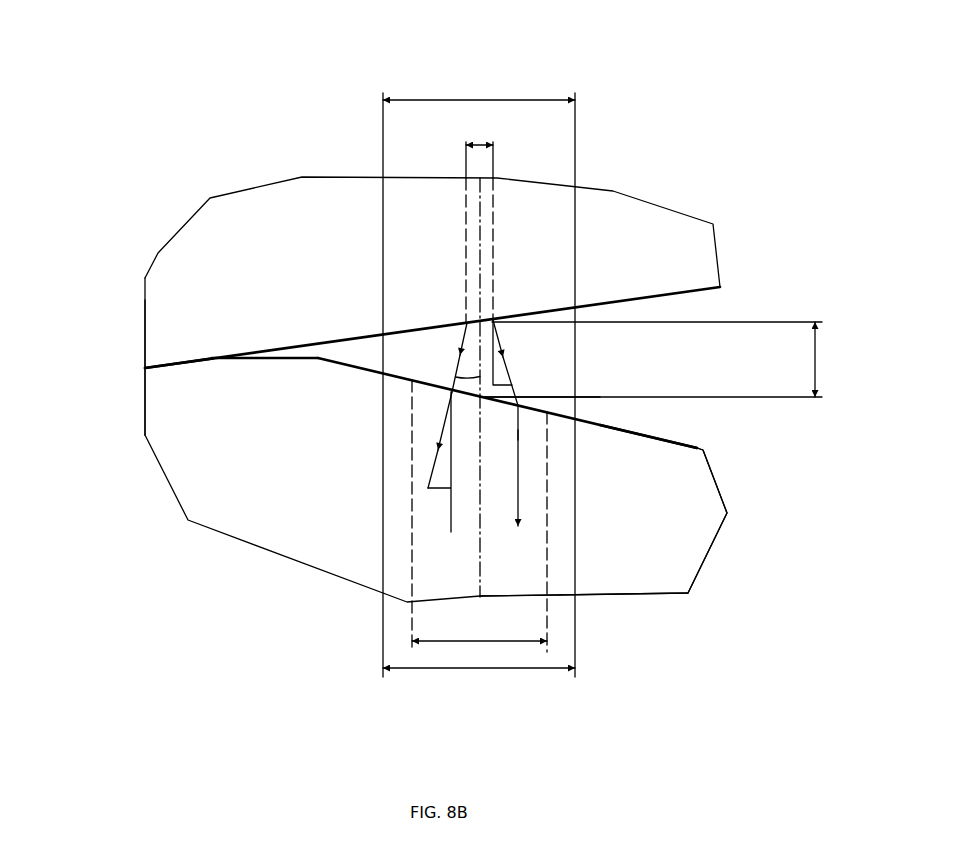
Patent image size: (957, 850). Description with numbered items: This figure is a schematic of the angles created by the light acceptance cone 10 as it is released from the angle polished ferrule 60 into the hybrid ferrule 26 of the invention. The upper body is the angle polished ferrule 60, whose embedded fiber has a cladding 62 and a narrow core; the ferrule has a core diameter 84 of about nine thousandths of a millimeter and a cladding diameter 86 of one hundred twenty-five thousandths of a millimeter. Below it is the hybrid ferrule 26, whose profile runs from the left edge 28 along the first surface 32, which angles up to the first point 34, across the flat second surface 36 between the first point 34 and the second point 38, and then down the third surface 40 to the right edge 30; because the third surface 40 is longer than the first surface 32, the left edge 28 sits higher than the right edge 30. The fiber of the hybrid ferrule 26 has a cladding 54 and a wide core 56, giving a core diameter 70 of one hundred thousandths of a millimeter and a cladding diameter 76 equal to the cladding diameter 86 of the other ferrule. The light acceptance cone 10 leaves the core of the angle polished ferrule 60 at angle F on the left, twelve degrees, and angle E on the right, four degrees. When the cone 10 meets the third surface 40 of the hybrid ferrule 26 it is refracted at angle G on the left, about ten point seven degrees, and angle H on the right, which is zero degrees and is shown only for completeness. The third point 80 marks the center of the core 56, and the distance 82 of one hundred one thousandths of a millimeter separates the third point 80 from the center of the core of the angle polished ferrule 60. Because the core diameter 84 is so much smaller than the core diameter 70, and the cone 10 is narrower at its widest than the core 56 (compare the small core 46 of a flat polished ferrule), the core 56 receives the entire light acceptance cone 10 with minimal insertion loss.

The light acceptance cone 10 is at (500, 347).
The hybrid ferrule 26 is at (200, 455).
The left edge 28 is at (145, 368).
The right edge 30 is at (577, 423).
The first surface 32 is at (182, 360).
The first point 34 is at (213, 358).
The second surface 36 is at (260, 360).
The second point 38 is at (315, 360).
The third surface 40 is at (690, 443).
The core 46 is at (485, 218).
The cladding 54 is at (565, 552).
The core 56 is at (540, 568).
The angle polished ferrule 60 is at (250, 258).
The cladding 62 is at (383, 260).
The core diameter 70 is at (485, 641).
The cladding diameter 76 is at (455, 670).
The third point 80 is at (481, 395).
The distance 82 is at (817, 377).
The core diameter 84 is at (488, 143).
The cladding diameter 86 is at (458, 98).
The angle H is at (520, 437).
The angle E is at (509, 353).
The angle F is at (459, 368).
The angle G is at (439, 462).